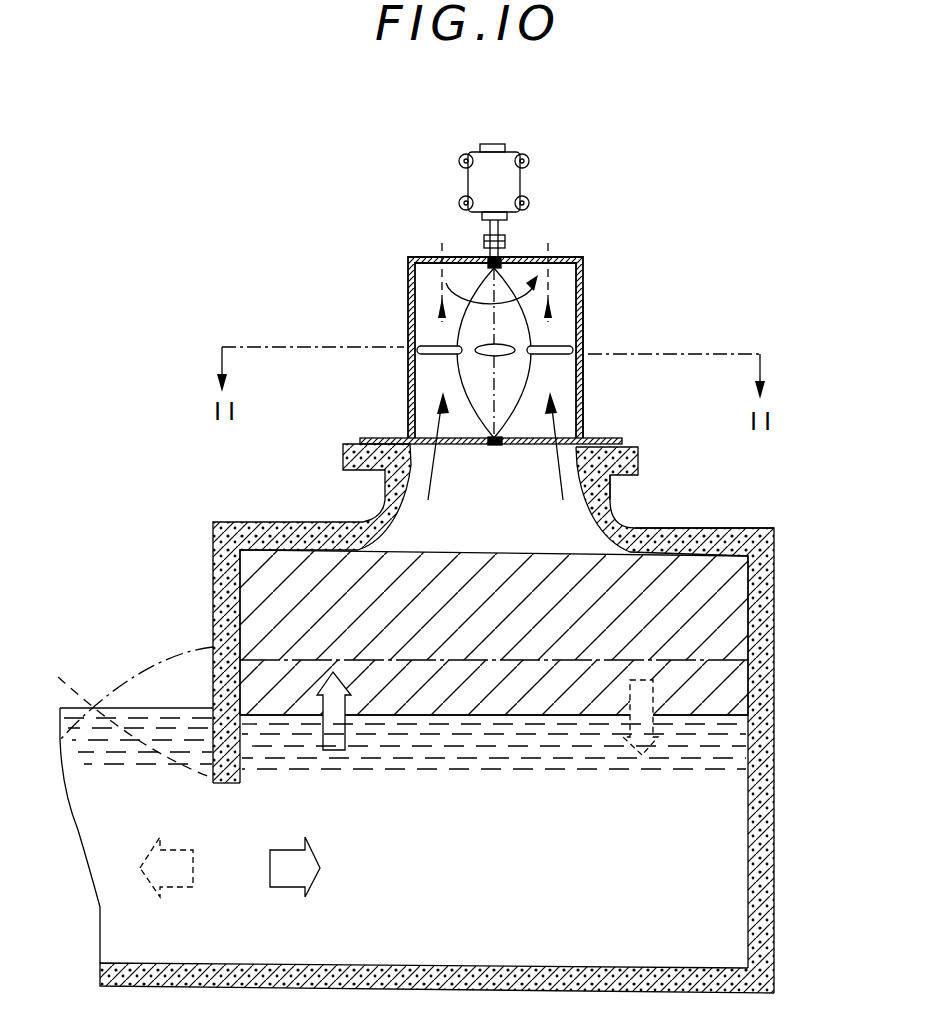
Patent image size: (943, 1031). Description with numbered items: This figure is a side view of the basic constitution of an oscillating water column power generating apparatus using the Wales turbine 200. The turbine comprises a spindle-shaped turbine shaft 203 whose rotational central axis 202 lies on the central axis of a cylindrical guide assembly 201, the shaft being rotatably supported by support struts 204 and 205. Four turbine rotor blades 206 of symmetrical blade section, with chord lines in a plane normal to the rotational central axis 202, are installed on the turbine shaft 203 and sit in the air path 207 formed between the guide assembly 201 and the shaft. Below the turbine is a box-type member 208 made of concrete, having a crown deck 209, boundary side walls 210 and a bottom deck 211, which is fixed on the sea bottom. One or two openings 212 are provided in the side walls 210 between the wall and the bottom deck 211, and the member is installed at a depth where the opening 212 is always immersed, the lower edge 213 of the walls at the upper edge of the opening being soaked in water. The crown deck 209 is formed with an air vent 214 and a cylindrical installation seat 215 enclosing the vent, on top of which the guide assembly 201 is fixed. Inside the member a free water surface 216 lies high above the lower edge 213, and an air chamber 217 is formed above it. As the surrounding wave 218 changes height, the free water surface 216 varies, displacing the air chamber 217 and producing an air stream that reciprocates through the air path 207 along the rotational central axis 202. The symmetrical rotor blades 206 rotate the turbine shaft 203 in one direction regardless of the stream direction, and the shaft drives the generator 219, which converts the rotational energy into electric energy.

The Wales turbine 200 is at (596, 274).
The cylindrical guide assembly 201 is at (581, 402).
The rotational central axis 202 is at (490, 331).
The turbine shaft 203 is at (485, 303).
The support strut 204 is at (540, 257).
The support strut 205 is at (420, 440).
The turbine rotor blades 206 is at (425, 357).
The air path 207 is at (562, 378).
The box-type member 208 is at (208, 536).
The crown deck 209 is at (738, 527).
The boundary side walls 210 is at (765, 630).
The bottom deck 211 is at (640, 990).
The opening 212 is at (213, 923).
The lower edge 213 is at (226, 784).
The air vent 214 is at (435, 510).
The cylindrical installation seat 215 is at (612, 503).
The free water surface 216 is at (742, 716).
The air chamber 217 is at (260, 603).
The surrounding wave 218 is at (145, 667).
The generator 219 is at (532, 175).